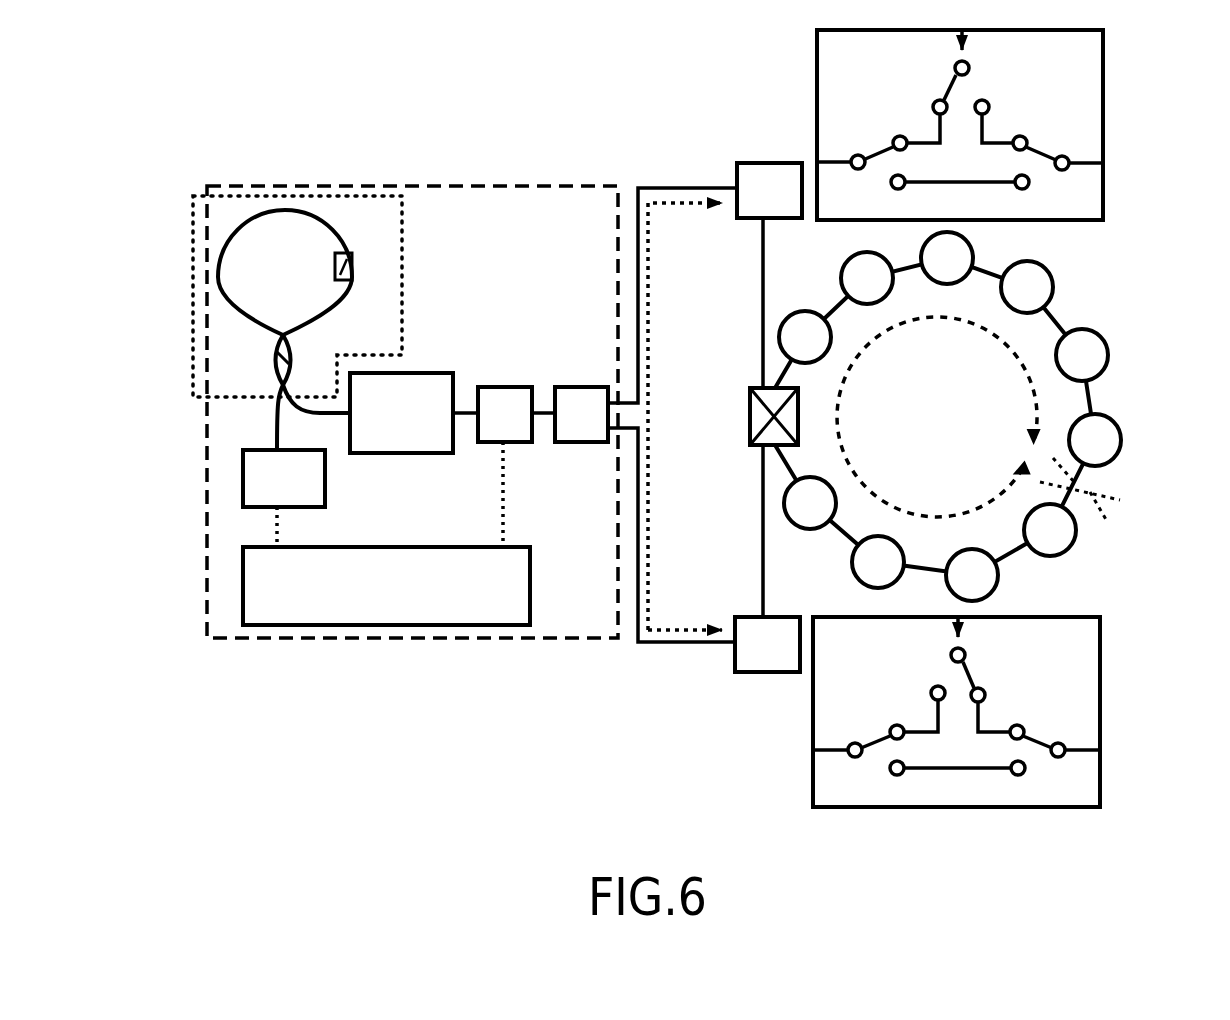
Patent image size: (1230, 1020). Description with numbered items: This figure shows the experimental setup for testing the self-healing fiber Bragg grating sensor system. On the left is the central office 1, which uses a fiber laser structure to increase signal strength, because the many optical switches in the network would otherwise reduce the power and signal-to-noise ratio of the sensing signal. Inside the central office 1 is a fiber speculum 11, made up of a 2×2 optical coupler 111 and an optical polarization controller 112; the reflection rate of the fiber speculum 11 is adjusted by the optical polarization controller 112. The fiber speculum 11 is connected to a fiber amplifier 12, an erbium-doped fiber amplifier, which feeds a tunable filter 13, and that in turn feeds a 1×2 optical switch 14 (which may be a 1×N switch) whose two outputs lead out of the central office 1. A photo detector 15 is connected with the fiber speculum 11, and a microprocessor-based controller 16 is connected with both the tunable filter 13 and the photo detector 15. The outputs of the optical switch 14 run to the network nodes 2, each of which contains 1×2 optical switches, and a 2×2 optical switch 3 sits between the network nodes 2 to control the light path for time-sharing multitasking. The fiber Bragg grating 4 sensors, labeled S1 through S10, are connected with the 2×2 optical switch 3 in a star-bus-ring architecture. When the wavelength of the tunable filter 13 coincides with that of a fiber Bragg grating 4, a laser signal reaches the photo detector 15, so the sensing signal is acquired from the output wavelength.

The central office 1 is at (318, 173).
The fiber speculum 11 is at (182, 260).
The 2×2 optical coupler 111 is at (276, 349).
The optical polarization controller 112 is at (345, 250).
The fiber amplifier 12 is at (430, 392).
The tunable filter 13 is at (505, 398).
The 1×2 optical switch 14 is at (567, 442).
The photo detector 15 is at (258, 478).
The microprocessor-based controller 16 is at (262, 585).
The network node 2 is at (725, 145).
The 2×2 optical switch 3 is at (737, 375).
The fiber Bragg grating 4 is at (1140, 404).